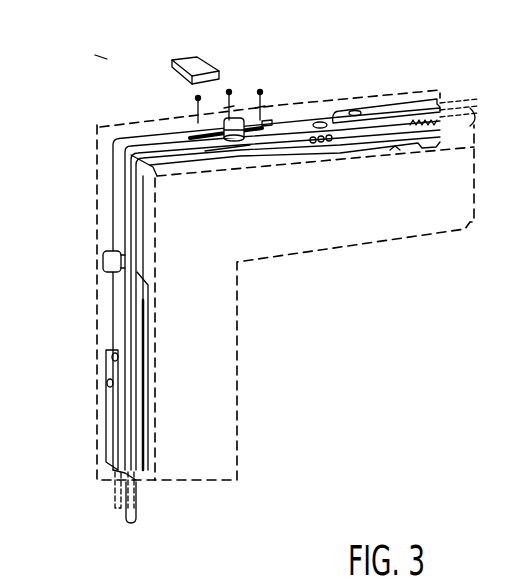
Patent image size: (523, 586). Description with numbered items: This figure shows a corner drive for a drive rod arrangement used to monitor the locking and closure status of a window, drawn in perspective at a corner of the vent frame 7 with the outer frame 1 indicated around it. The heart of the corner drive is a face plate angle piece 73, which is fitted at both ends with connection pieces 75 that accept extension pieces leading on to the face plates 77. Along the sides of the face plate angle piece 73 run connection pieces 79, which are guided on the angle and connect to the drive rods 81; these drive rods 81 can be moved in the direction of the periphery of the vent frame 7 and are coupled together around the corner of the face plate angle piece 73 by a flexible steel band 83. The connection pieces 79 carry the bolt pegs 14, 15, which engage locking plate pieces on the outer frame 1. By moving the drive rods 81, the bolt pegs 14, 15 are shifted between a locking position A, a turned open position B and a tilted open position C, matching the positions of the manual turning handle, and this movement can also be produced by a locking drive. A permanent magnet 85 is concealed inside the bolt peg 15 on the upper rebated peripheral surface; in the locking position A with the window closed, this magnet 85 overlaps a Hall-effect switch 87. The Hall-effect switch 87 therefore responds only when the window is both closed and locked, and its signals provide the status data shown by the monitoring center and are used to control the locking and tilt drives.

The outer frame 1 is at (158, 93).
The vent frame 7 is at (358, 246).
The bolt peg 14 is at (104, 262).
The bolt peg 15 is at (262, 123).
The face plate angle piece 73 is at (116, 171).
The connection pieces 75 is at (403, 107).
The face plates 77 is at (459, 107).
The connection pieces 79 is at (393, 150).
The drive rods 81 is at (476, 122).
The flexible steel band 83 is at (152, 167).
The permanent magnet 85 is at (268, 118).
The Hall-effect switch 87 is at (191, 59).
The locking position A is at (196, 97).
The turned open position B is at (229, 90).
The tilted open position C is at (260, 90).